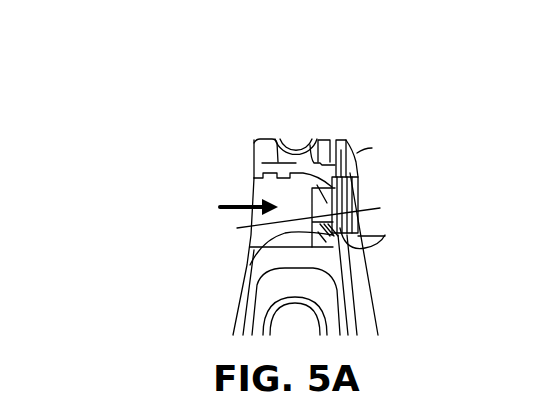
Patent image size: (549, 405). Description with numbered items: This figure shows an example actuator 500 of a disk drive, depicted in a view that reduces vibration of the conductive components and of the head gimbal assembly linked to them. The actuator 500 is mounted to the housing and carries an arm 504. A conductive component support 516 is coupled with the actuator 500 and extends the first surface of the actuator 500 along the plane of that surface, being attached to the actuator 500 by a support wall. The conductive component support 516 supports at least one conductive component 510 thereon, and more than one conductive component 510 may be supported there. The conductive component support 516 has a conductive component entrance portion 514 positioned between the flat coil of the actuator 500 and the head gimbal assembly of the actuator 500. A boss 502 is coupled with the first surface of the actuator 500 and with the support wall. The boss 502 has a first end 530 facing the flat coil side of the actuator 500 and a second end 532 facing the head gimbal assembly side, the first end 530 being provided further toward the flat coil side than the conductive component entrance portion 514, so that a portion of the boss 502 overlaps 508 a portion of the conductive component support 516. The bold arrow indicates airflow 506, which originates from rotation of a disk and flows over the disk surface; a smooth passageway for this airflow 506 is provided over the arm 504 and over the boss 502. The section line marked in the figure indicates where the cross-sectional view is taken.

The actuator 500 is at (106, 102).
The boss 502 is at (262, 168).
The arm 504 is at (262, 178).
The airflow 506 is at (220, 207).
The overlap 508 is at (250, 262).
The conductive component 510 is at (352, 155).
The second end 532 is at (355, 178).
The conductive component entrance portion 514 is at (352, 233).
The first end 530 is at (342, 257).
The conductive component support 516 is at (355, 283).